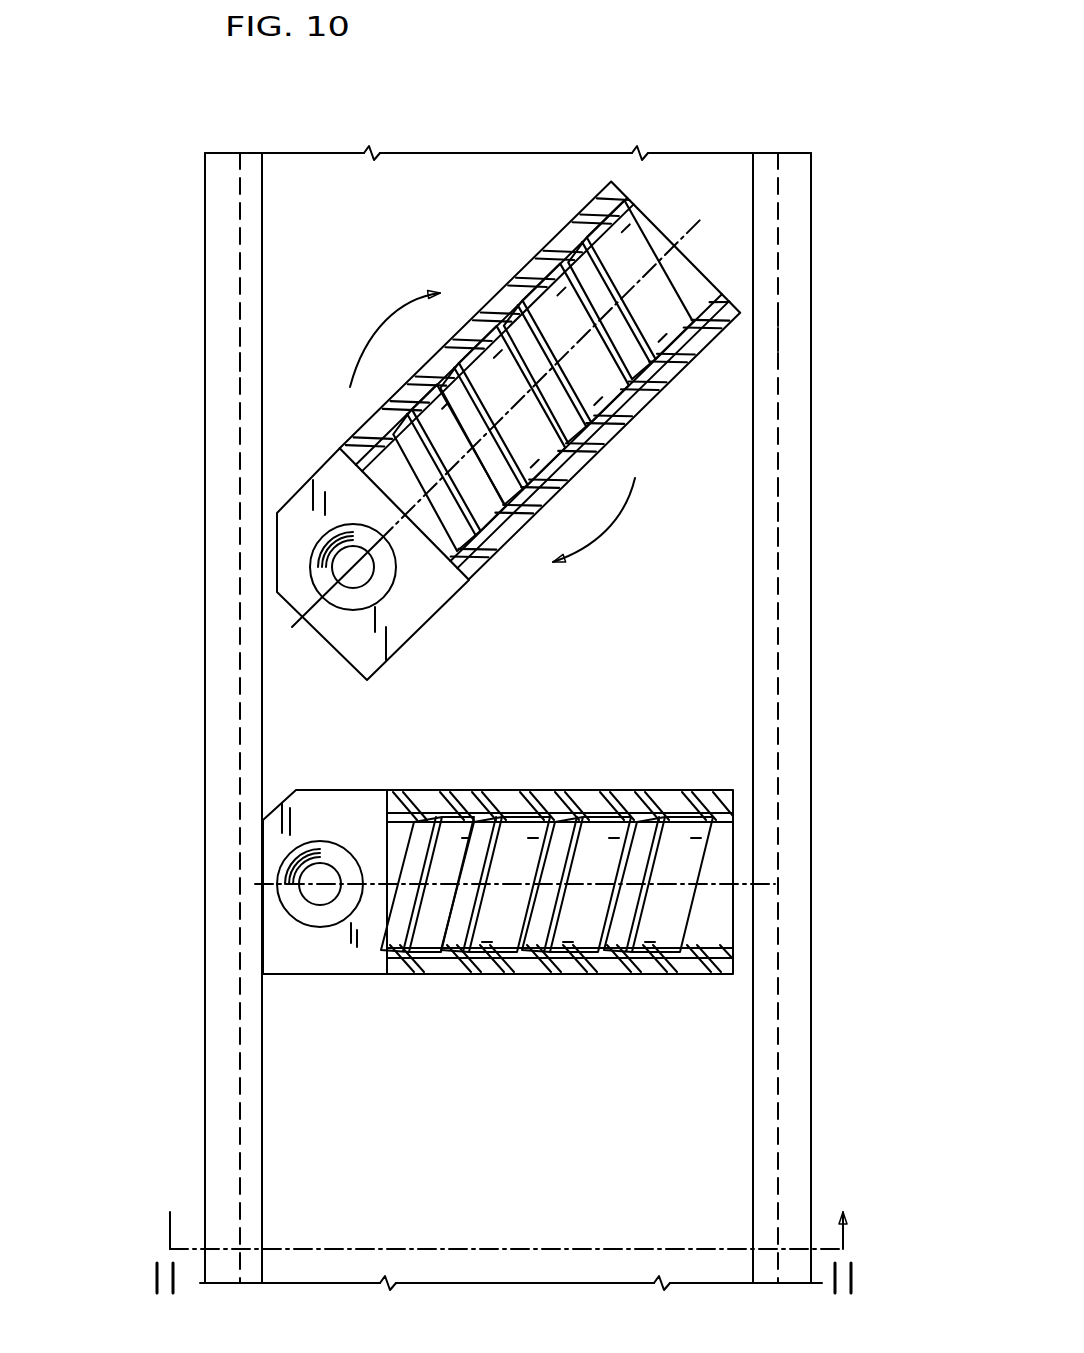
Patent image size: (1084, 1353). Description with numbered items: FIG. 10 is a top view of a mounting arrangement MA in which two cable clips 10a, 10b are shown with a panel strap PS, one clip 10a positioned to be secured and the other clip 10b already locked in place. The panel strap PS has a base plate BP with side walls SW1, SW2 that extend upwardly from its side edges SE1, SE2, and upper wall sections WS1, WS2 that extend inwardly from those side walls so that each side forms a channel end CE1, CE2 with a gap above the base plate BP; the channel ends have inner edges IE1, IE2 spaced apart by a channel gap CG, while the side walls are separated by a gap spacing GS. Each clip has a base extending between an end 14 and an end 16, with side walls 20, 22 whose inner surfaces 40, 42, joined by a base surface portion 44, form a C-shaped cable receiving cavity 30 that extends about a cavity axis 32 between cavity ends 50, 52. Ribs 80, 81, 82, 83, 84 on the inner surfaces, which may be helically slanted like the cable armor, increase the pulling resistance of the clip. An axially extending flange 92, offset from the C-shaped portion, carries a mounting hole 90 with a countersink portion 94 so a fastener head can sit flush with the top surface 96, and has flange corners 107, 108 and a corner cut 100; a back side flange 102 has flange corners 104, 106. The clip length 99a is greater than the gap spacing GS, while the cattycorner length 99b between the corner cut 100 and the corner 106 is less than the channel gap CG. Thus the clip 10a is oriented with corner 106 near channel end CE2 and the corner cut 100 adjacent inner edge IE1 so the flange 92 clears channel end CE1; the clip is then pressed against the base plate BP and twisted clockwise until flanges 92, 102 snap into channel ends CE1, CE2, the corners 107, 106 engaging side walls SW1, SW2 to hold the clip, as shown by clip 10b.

The clip 10a is at (340, 407).
The clip 10b is at (650, 760).
The end 14 is at (305, 612).
The end 16 is at (700, 272).
The side wall 20 is at (508, 277).
The side wall 22 is at (648, 428).
The cable receiving cavity 30 is at (425, 975).
The cavity axis 32 is at (665, 885).
The inner surface 40 is at (470, 337).
The inner surface 42 is at (478, 975).
The base surface portion 44 is at (385, 912).
The cavity end 50 is at (335, 925).
The cavity end 52 is at (735, 903).
The rib 80 is at (415, 860).
The rib 81 is at (485, 820).
The rib 82 is at (555, 815).
The rib 83 is at (637, 800).
The rib 84 is at (700, 830).
The mounting hole 90 is at (293, 905).
The flange 92 is at (293, 802).
The countersink portion 94 is at (293, 893).
The top surface 96 is at (366, 975).
The length 99a is at (772, 1028).
The cattycorner length 99b is at (285, 533).
The corner cut 100 is at (287, 535).
The back side flange 102 is at (735, 805).
The flange corner 104 is at (745, 790).
The flange corner 106 is at (760, 975).
The flange corner 107 is at (277, 593).
The flange corner 108 is at (367, 680).
The panel strap PS is at (300, 150).
The side wall SW1 is at (205, 229).
The side wall SW2 is at (811, 572).
The upper wall section WS1 is at (250, 353).
The upper wall section WS2 is at (770, 333).
The inner edge IE1 is at (262, 228).
The inner edge IE2 is at (753, 604).
The mounting arrangement MA is at (827, 385).
The base plate BP is at (725, 495).
The side edge SE1 is at (240, 1138).
The side edge SE2 is at (778, 520).
The channel end CE1 is at (223, 1065).
The channel end CE2 is at (800, 1057).
The gap spacing GS is at (780, 1081).
The channel gap CG is at (753, 1138).